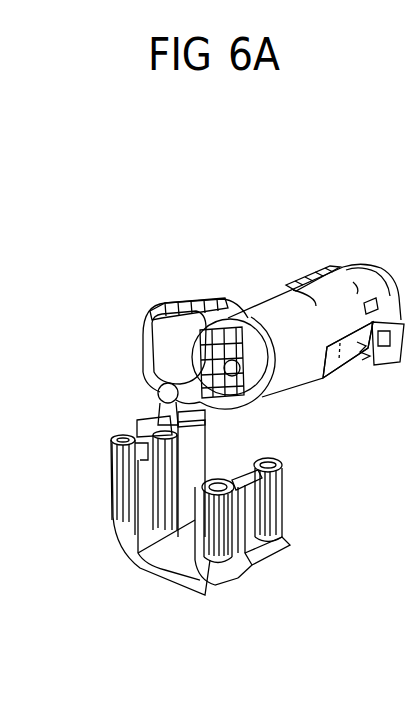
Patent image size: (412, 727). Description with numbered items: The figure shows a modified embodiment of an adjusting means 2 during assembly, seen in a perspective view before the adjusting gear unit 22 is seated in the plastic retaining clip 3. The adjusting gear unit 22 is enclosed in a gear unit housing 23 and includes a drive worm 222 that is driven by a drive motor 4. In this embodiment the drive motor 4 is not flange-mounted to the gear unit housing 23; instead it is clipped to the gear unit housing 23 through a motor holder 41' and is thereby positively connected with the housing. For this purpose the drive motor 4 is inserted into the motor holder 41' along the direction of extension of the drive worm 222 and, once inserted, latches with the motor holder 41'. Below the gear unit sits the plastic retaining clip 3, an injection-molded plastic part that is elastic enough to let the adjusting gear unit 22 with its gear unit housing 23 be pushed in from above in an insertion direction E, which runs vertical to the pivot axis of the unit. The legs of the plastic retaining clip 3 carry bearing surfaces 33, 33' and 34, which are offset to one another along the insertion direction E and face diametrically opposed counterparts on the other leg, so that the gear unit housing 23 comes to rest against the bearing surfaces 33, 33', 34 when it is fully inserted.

The adjusting means 2 is at (246, 215).
The adjusting gear unit 22 is at (190, 292).
The gear unit housing 23 is at (163, 352).
The motor holder 41' is at (316, 323).
The drive worm 222 is at (160, 394).
The drive motor 4 is at (352, 347).
The insertion direction E is at (218, 420).
The plastic retaining clip 3 is at (146, 582).
The bearing surface 34 is at (138, 493).
The bearing surface 33 is at (191, 553).
The bearing surface 33' is at (221, 556).